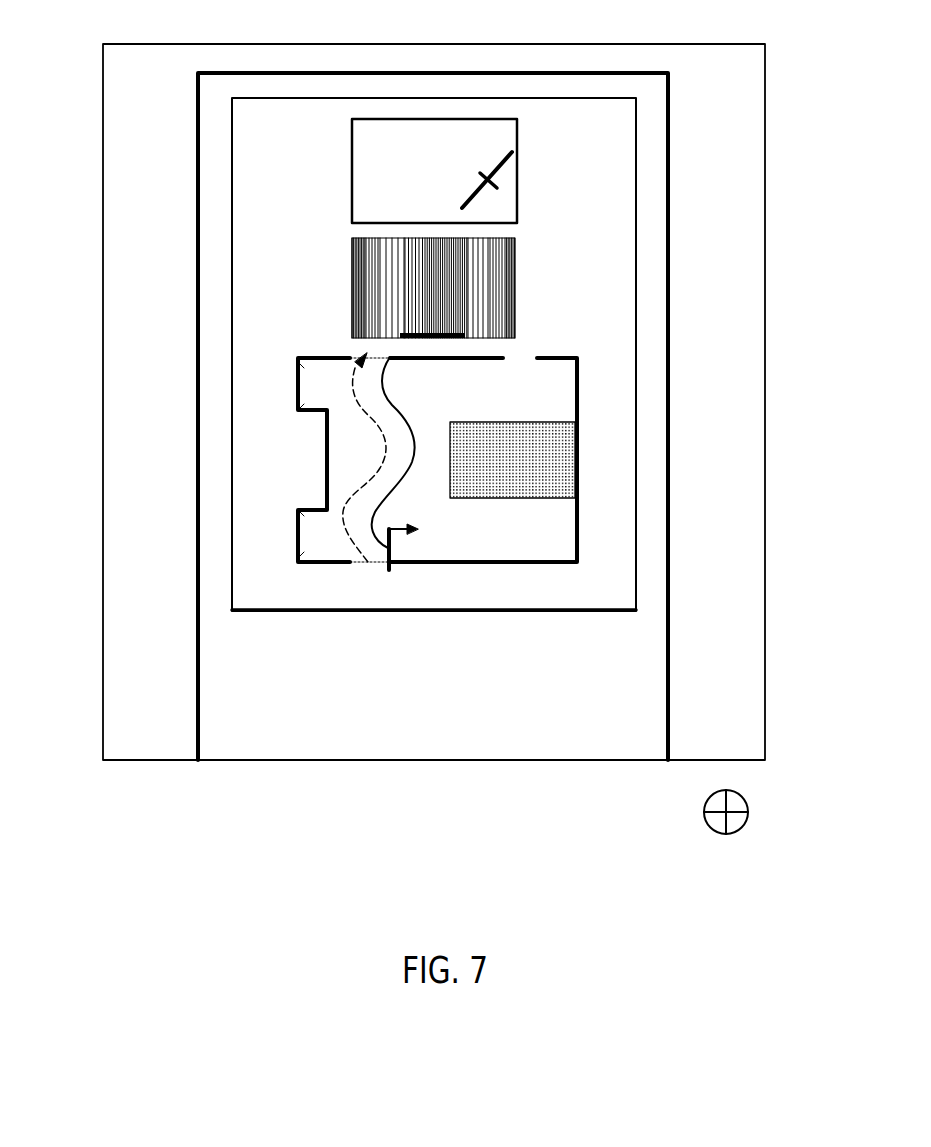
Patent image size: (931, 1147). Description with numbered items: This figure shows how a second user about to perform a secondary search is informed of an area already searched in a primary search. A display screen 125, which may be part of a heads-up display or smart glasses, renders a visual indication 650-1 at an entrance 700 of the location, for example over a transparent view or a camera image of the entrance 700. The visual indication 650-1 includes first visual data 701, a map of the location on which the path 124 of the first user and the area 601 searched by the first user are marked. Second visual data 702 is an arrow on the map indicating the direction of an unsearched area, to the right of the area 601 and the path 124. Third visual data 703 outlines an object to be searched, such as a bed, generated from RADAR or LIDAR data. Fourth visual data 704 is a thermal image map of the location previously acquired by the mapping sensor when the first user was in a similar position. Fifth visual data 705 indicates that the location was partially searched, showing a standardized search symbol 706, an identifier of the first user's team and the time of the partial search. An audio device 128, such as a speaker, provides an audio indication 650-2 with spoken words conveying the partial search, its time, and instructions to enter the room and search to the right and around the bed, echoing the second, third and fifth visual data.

The display screen 125 is at (103, 366).
The entrance 700 is at (198, 418).
The visual indication 650-1 is at (436, 612).
The fifth visual data 705 is at (352, 171).
The symbol 706 is at (512, 161).
The fourth visual data 704 is at (352, 291).
The first visual data 701 is at (327, 458).
The third visual data 703 is at (510, 498).
The area 601 is at (386, 372).
The path 124 is at (378, 490).
The second visual data 702 is at (393, 540).
The audio device 128 is at (704, 812).
The audio indication 650-2 is at (545, 880).